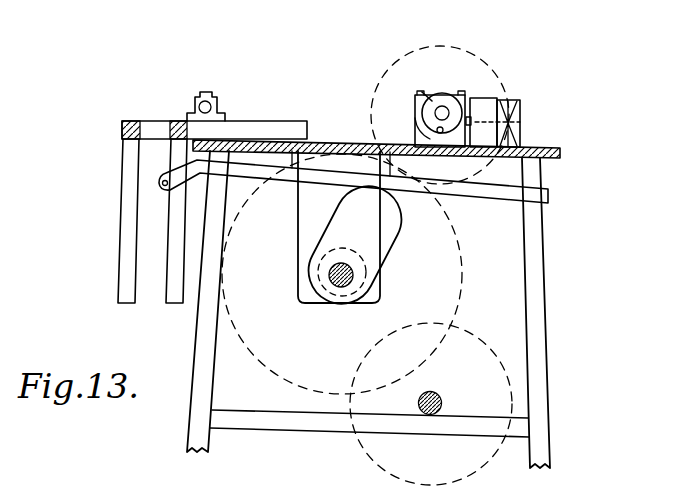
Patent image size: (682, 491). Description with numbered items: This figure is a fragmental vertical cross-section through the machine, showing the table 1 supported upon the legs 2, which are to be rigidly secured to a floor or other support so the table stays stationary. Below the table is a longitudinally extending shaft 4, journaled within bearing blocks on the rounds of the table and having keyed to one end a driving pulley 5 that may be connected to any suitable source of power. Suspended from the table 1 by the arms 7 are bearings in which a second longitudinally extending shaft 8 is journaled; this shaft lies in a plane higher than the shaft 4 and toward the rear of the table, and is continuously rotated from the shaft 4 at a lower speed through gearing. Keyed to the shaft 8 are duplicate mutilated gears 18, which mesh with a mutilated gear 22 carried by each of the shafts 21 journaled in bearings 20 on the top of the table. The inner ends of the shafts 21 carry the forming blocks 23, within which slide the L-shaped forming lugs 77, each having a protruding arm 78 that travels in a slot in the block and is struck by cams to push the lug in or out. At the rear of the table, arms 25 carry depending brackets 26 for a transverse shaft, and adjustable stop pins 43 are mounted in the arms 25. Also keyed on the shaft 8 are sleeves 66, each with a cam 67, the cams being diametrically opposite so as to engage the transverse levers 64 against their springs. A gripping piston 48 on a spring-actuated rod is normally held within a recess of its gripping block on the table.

The table 1 is at (561, 153).
The legs 2 is at (203, 340).
The longitudinally extending shaft 4 is at (438, 396).
The driving pulley 5 is at (512, 400).
The arms 7 is at (308, 242).
The longitudinally extending shaft 8 is at (338, 290).
The mutilated gears 18 is at (465, 288).
The bearings 20 is at (450, 94).
The shafts 21 is at (442, 106).
The mutilated gear 22 is at (412, 46).
The forming block 23 is at (424, 96).
The arms 25 is at (150, 126).
The depending brackets 26 is at (124, 216).
The stop pins 43 is at (208, 108).
The gripping piston 48 is at (522, 120).
The levers 64 is at (504, 193).
The sleeves 66 is at (372, 245).
The cam 67 is at (390, 218).
The forming lugs 77 is at (437, 129).
The protruding arm 78 is at (380, 143).